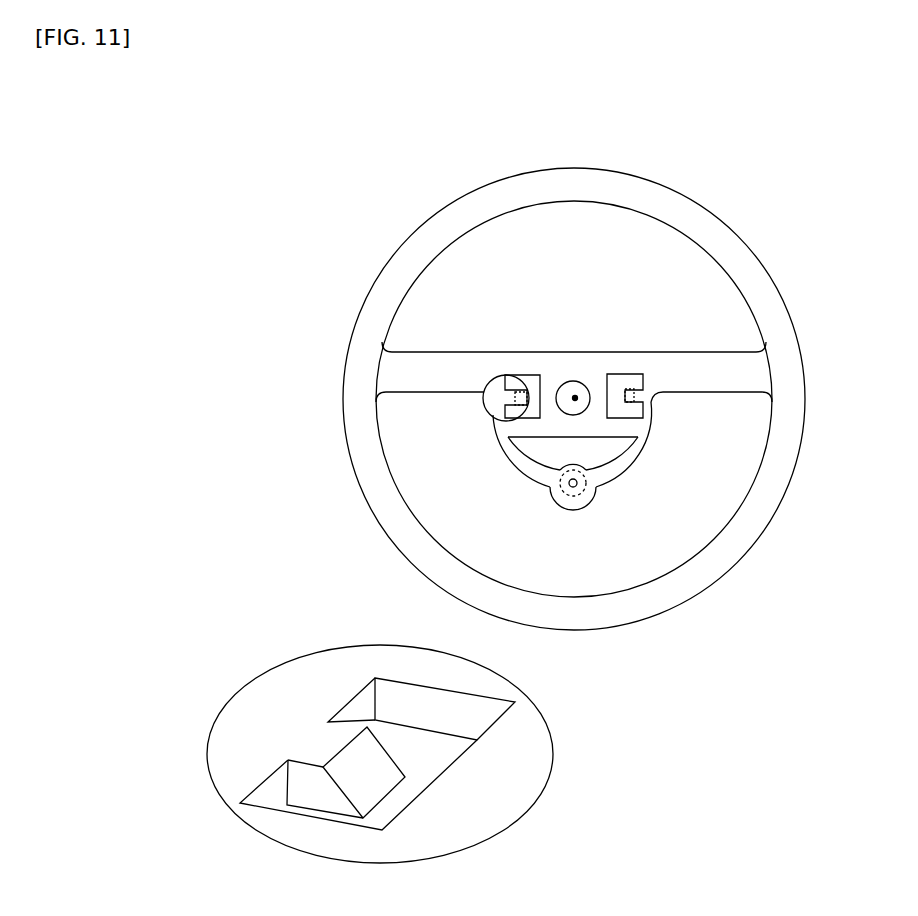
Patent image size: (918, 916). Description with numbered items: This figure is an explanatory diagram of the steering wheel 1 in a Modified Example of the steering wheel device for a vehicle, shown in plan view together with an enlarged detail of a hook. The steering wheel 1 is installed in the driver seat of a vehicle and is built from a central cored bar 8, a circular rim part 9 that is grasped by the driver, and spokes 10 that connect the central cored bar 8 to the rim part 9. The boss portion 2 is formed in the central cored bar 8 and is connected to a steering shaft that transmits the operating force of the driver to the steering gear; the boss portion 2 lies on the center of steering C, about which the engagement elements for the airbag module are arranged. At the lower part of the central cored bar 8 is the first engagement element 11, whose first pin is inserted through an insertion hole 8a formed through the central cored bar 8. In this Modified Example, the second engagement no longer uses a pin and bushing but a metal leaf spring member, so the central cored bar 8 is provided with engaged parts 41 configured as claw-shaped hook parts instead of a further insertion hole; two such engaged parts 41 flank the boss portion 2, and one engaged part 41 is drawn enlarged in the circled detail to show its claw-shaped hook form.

The steering wheel 1 is at (714, 188).
The boss portion 2 is at (575, 396).
The central cored bar 8 is at (404, 646).
The insertion hole 8a is at (573, 490).
The rim part 9 is at (350, 444).
The spokes 10 is at (421, 361).
The first engagement element 11 is at (598, 496).
The engaged part 41 is at (526, 396).
The center of steering C is at (576, 401).